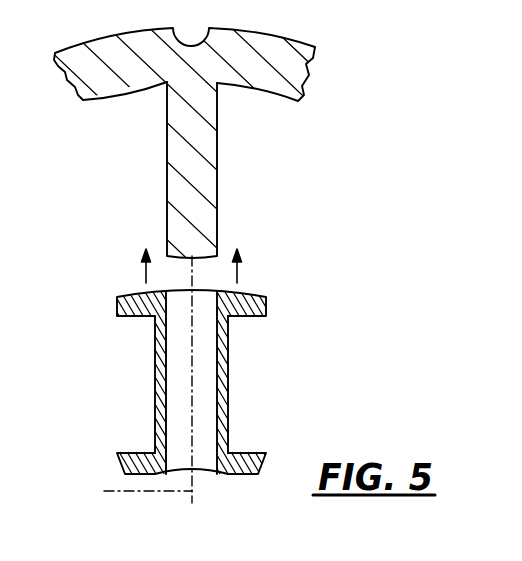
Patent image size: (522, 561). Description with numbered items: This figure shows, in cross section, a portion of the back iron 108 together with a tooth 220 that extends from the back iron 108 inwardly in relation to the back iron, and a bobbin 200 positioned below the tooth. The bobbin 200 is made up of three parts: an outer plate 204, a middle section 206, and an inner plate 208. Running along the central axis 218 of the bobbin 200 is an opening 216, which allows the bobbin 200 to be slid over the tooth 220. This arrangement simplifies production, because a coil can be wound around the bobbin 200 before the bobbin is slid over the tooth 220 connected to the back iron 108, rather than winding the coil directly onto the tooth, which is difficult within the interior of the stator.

The back iron 108 is at (248, 43).
The tooth 220 is at (203, 145).
The bobbin 200 is at (208, 371).
The outer plate 204 is at (139, 312).
The middle section 206 is at (158, 385).
The inner plate 208 is at (140, 467).
The opening 216 is at (203, 460).
The central axis 218 is at (127, 496).